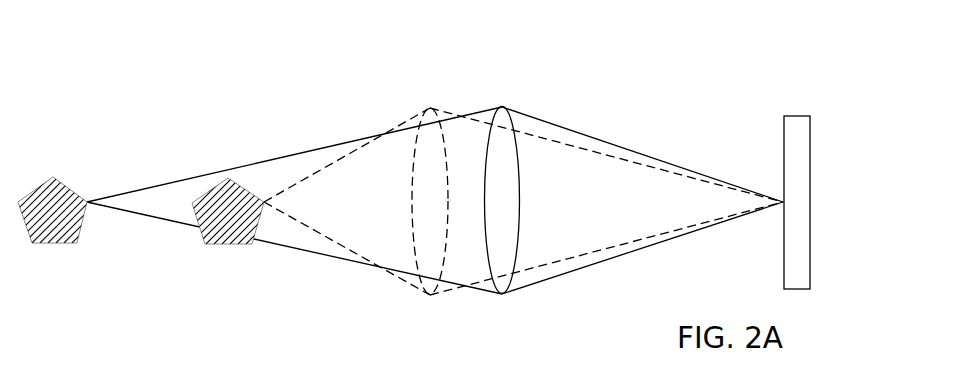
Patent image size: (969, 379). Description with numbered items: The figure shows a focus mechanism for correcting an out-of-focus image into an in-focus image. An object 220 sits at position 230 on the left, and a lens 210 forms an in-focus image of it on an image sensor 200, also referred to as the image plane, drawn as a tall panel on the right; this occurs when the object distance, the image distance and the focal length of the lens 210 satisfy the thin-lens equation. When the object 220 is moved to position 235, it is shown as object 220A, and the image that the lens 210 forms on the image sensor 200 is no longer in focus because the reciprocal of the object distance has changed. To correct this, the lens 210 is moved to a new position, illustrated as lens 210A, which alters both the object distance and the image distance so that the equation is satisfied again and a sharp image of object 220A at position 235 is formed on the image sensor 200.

The image sensor 200 is at (783, 133).
The lens 210 is at (488, 137).
The lens at new position 210A is at (412, 133).
The object 220 is at (391, 200).
The object at moved position 220A is at (454, 201).
The object position 230 is at (52, 173).
The new object position 235 is at (215, 245).